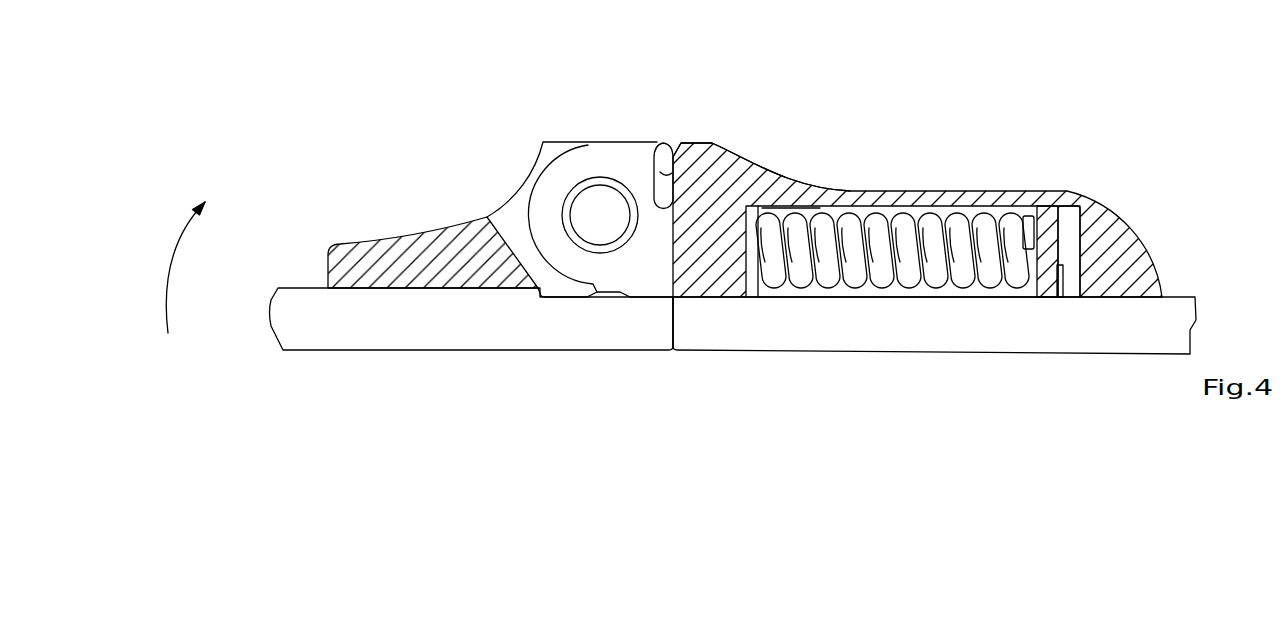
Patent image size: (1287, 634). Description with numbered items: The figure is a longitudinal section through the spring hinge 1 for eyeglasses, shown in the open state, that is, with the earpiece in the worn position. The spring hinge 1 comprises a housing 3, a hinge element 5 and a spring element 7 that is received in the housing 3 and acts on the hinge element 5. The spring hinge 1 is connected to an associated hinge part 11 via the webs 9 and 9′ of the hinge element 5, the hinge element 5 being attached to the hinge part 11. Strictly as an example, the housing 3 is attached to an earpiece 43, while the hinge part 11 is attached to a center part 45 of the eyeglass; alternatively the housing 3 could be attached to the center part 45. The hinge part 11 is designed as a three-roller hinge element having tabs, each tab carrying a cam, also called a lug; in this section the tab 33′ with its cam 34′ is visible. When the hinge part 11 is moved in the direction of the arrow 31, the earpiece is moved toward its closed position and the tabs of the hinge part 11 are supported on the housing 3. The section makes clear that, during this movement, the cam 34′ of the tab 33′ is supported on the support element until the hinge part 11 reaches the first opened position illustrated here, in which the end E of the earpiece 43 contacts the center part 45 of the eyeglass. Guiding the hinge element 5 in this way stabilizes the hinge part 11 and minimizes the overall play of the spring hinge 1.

The spring hinge 1 is at (843, 127).
The housing 3 is at (1112, 223).
The hinge element 5 is at (1043, 213).
The spring element 7 is at (902, 227).
The web 9 is at (516, 122).
The web 9′ is at (600, 168).
The hinge part 11 is at (462, 255).
The arrow 31 is at (165, 277).
The tab 33′ is at (715, 148).
The cam 34′ is at (663, 143).
The earpiece 43 is at (962, 337).
The center part 45 is at (313, 333).
The end of the earpiece E is at (677, 323).